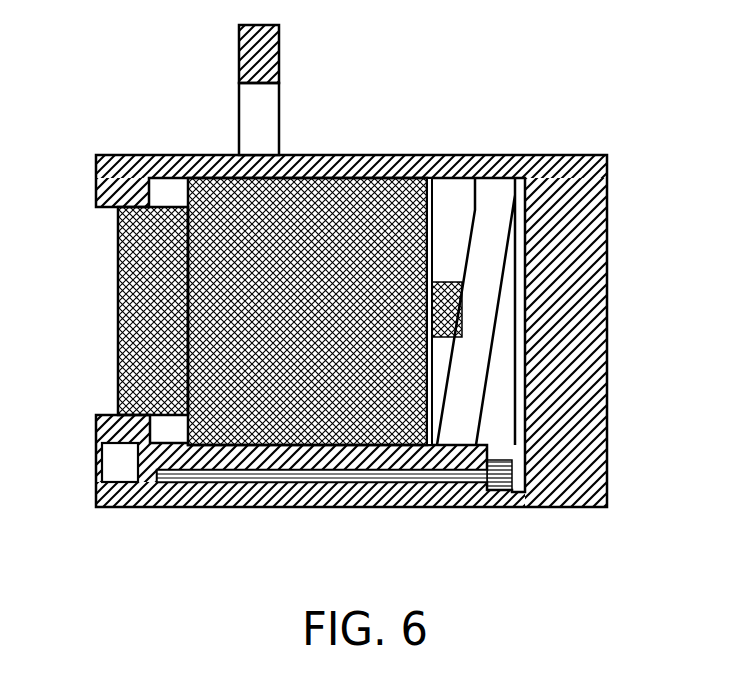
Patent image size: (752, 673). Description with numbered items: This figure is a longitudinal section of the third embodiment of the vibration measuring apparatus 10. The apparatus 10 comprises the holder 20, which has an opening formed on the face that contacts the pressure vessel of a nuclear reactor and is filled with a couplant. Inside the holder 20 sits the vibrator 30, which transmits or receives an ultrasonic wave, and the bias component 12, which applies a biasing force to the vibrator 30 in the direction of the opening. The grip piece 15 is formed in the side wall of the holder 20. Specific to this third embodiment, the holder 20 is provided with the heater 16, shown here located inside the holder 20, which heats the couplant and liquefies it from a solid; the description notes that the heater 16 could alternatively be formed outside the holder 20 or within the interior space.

The vibration measuring apparatus 10 is at (335, 293).
The bias component 12 is at (474, 178).
The grip piece 15 is at (280, 53).
The heater 16 is at (368, 507).
The holder 20 is at (560, 207).
The vibrator 30 is at (370, 207).